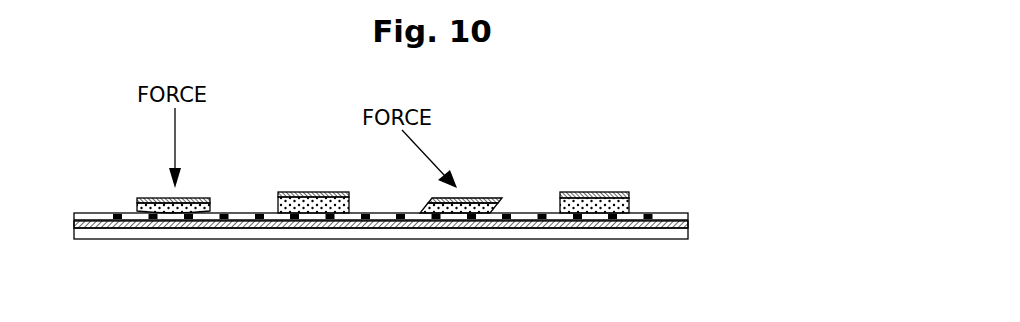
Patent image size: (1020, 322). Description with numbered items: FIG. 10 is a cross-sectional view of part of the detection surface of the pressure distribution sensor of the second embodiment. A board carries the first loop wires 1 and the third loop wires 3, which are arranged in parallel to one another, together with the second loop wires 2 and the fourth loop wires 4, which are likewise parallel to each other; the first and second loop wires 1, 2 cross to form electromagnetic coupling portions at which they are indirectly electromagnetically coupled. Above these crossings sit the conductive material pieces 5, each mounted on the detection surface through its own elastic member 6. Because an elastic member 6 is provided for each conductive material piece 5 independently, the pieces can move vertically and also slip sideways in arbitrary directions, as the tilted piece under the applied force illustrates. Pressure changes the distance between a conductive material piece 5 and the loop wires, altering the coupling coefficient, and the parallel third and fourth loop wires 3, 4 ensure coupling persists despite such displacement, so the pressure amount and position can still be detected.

The first loop wires 1 is at (265, 224).
The second loop wires 2 is at (207, 223).
The third loop wires 3 is at (298, 224).
The fourth loop wires 4 is at (207, 223).
The conductive material pieces 5 is at (290, 197).
The elastic members 6 is at (325, 206).